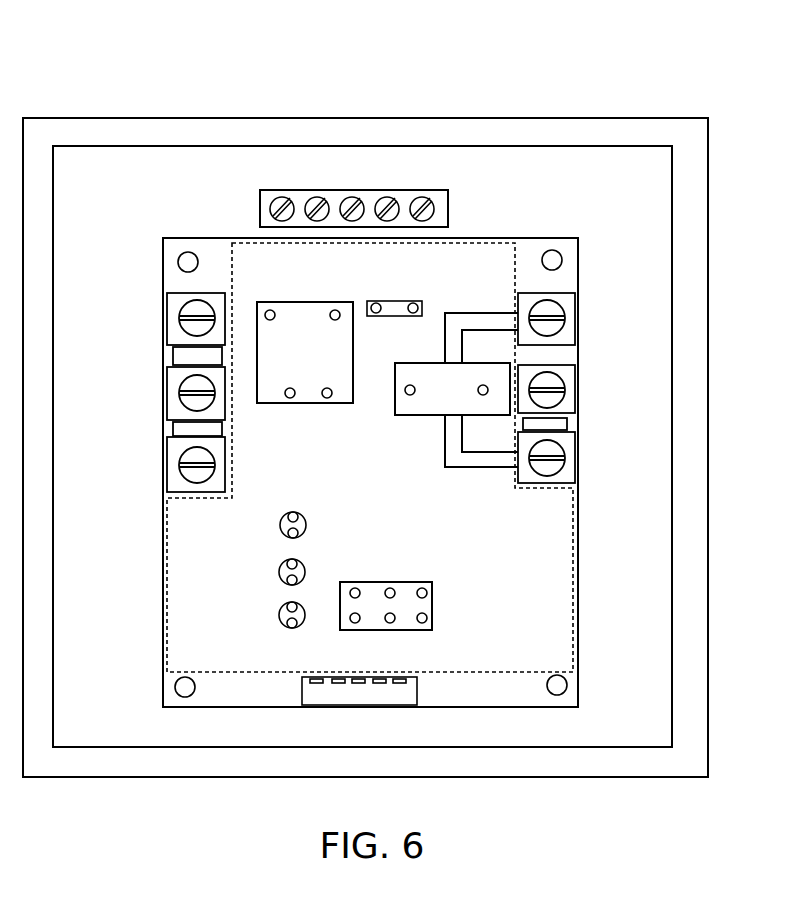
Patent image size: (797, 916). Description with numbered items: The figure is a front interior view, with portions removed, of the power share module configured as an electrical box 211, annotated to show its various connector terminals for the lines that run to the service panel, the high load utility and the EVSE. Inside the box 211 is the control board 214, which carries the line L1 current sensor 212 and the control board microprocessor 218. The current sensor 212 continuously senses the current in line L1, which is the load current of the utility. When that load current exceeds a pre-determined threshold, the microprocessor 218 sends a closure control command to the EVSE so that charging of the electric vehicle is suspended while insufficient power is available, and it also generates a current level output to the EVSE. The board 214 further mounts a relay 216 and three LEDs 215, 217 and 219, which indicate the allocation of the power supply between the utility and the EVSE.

The electrical box 211 is at (113, 58).
The line L1 current sensor 212 is at (483, 320).
The control board 214 is at (580, 592).
The LED 215 is at (308, 525).
The relay RLY1 216 is at (432, 597).
The LED 217 is at (278, 572).
The control board microprocessor 218 is at (333, 300).
The LED 219 is at (277, 613).